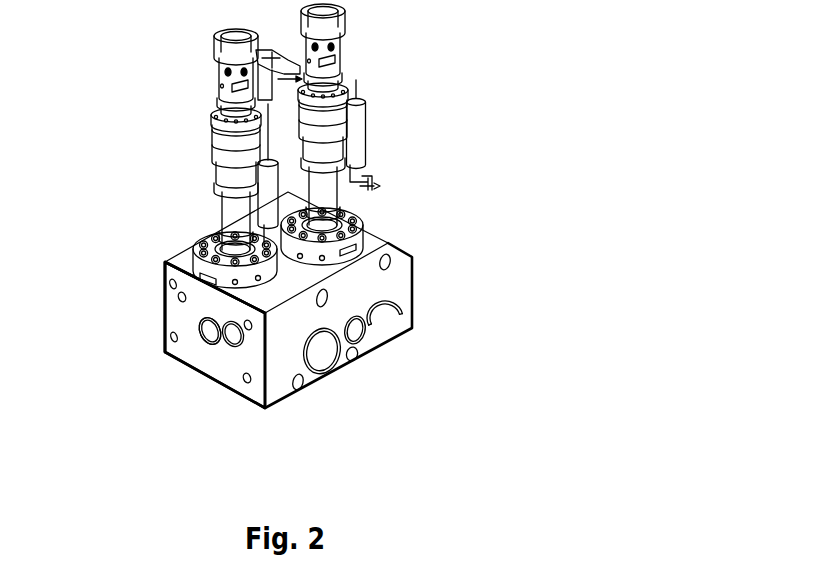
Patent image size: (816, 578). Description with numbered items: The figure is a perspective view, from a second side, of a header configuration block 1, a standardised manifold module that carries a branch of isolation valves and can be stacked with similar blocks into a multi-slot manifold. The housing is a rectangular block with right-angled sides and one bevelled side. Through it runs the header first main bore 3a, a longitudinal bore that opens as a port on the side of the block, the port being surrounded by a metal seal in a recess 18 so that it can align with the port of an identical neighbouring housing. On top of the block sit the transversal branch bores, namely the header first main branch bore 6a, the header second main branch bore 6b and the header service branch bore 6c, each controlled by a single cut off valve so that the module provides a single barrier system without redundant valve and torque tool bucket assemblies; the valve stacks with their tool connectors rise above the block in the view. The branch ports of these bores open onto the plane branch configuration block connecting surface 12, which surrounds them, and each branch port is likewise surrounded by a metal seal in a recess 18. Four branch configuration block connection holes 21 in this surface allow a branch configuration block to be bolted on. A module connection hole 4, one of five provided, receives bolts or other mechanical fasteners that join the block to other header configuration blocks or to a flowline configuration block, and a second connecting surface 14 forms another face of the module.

The header configuration block 1 is at (372, 235).
The branch configuration block connection holes 21 is at (165, 262).
The header service branch bore 6c is at (177, 297).
The metal seal in metal seal recess 18 is at (202, 323).
The header second main branch bore 6b is at (203, 333).
The branch configuration block connecting surface 12 is at (215, 358).
The header first main branch bore 6a is at (235, 340).
The module connection hole 4 is at (352, 355).
The second connecting surface 14 is at (390, 273).
The header first main bore 3a is at (386, 309).